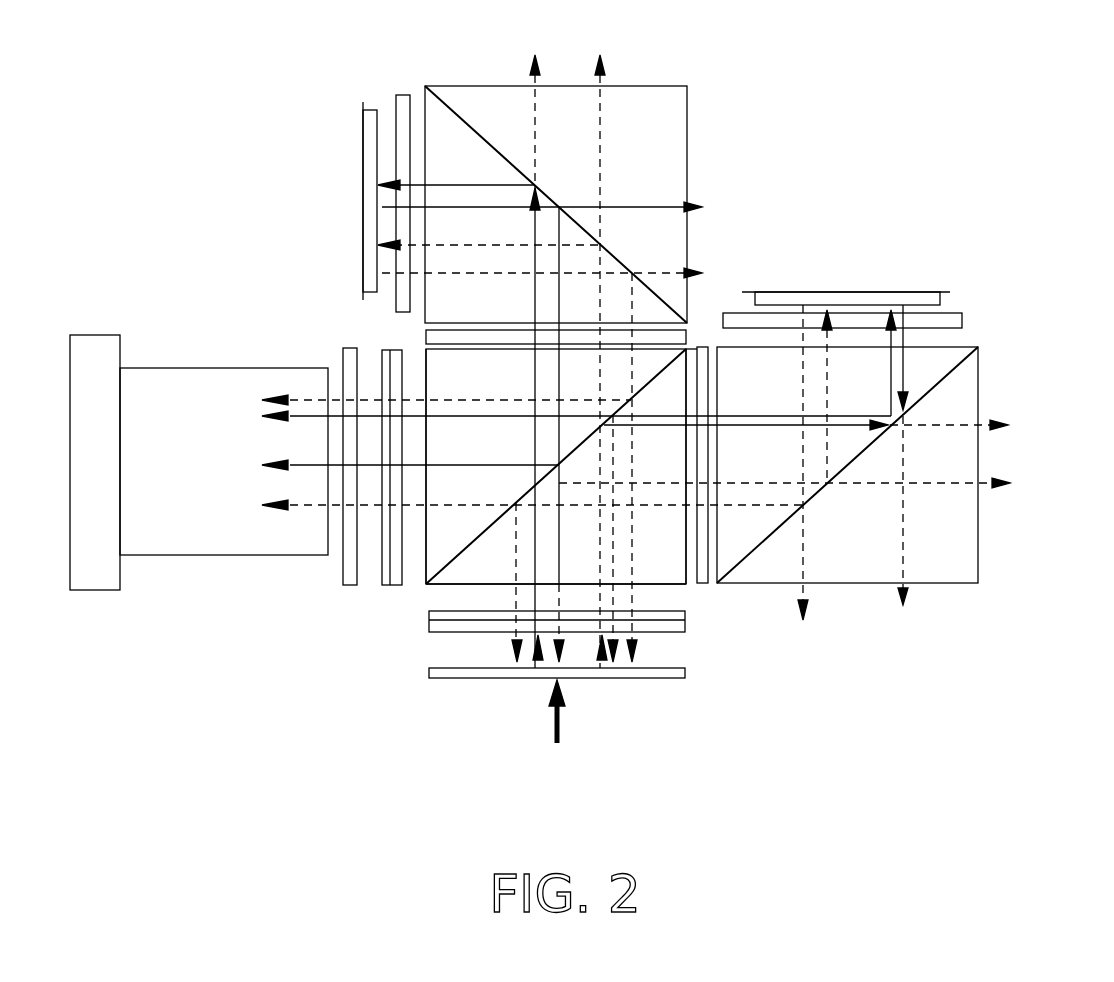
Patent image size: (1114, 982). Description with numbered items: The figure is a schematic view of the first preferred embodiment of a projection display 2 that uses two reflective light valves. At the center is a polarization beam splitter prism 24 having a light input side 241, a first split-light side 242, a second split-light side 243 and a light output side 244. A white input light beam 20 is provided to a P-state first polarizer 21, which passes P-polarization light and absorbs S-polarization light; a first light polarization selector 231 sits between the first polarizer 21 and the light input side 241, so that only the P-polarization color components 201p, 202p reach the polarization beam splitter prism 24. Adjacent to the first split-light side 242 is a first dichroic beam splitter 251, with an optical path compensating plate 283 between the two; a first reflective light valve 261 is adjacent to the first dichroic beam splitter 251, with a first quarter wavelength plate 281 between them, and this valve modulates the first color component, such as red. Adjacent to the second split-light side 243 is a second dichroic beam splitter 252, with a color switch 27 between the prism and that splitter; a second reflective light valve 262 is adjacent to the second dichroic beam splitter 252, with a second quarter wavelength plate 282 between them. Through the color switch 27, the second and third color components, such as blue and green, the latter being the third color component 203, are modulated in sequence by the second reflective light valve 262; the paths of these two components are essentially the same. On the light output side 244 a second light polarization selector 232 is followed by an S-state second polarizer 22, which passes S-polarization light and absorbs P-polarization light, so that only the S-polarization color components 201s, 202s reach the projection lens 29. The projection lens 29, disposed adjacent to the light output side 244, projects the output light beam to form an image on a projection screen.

The projection display 2 is at (874, 132).
The input light beam 20 is at (558, 745).
The S-polarization first color component 201s is at (360, 408).
The P-polarization first color component 201p is at (418, 400).
The S-polarization second color component 202s is at (457, 207).
The P-polarization second color component 202p is at (473, 185).
The third color component 203 is at (512, 715).
The P-state first polarizer 21 is at (687, 673).
The S-state second polarizer 22 is at (350, 576).
The polarization beam splitter prism 24 is at (675, 570).
The light input side 241 is at (653, 595).
The first split-light side 242 is at (673, 537).
The second split-light side 243 is at (657, 360).
The light output side 244 is at (427, 545).
The color switch 27 is at (692, 349).
The projection lens 29 is at (153, 405).
The first light polarization selector 231 is at (685, 615).
The second light polarization selector 232 is at (390, 588).
The first dichroic beam splitter 251 is at (960, 562).
The second dichroic beam splitter 252 is at (670, 110).
The first reflective light valve 261 is at (937, 295).
The second reflective light valve 262 is at (368, 123).
The first quarter wavelength plate 281 is at (963, 318).
The second quarter wavelength plate 282 is at (400, 98).
The optical path compensating plate 283 is at (703, 347).